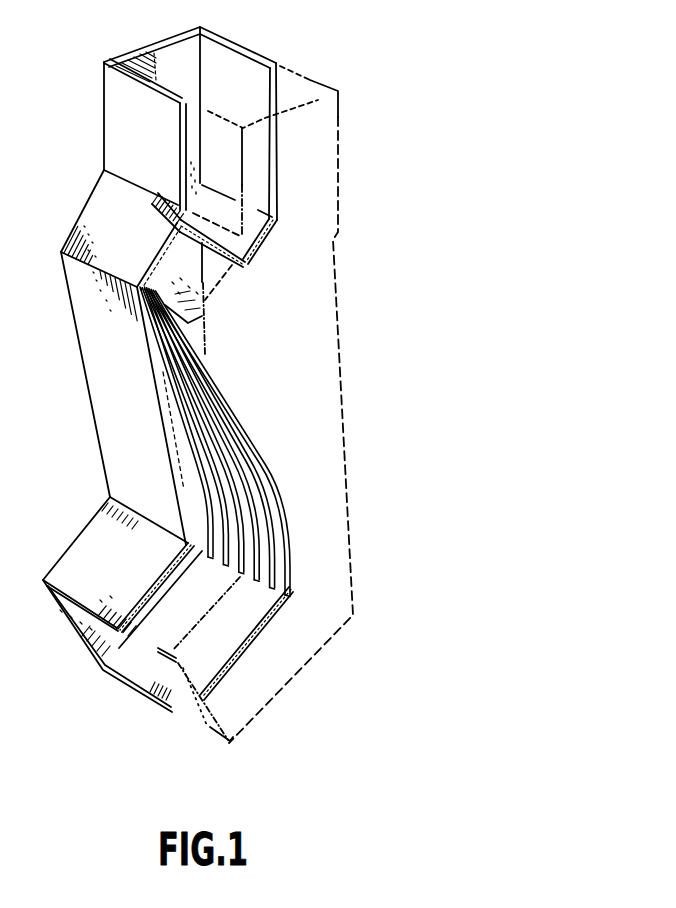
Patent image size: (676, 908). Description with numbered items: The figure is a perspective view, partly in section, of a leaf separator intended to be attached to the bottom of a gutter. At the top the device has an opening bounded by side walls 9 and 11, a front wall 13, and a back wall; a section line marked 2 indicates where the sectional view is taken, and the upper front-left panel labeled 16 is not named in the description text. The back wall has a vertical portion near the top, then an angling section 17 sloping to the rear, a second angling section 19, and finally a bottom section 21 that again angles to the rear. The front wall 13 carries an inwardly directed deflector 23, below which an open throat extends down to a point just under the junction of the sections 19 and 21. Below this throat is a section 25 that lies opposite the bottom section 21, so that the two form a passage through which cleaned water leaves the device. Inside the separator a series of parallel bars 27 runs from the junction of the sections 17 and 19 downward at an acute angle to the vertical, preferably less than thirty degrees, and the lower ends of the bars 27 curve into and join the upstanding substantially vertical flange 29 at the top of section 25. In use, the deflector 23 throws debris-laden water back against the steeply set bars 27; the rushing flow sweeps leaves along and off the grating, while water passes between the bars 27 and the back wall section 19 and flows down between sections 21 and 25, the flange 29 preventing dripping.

The section line 2- 2 is at (327, 43).
The side wall 9 is at (343, 112).
The side wall 11 is at (130, 50).
The front wall 13 is at (266, 56).
The front flange of upper channel 16 is at (140, 89).
The angling section 17 is at (100, 210).
The second angling section 19 is at (124, 373).
The bottom section 21 is at (128, 578).
The deflector 23 is at (262, 246).
The section 25 is at (150, 682).
The parallel bars 27 is at (242, 452).
The upstanding substantially vertical flange 29 is at (297, 567).